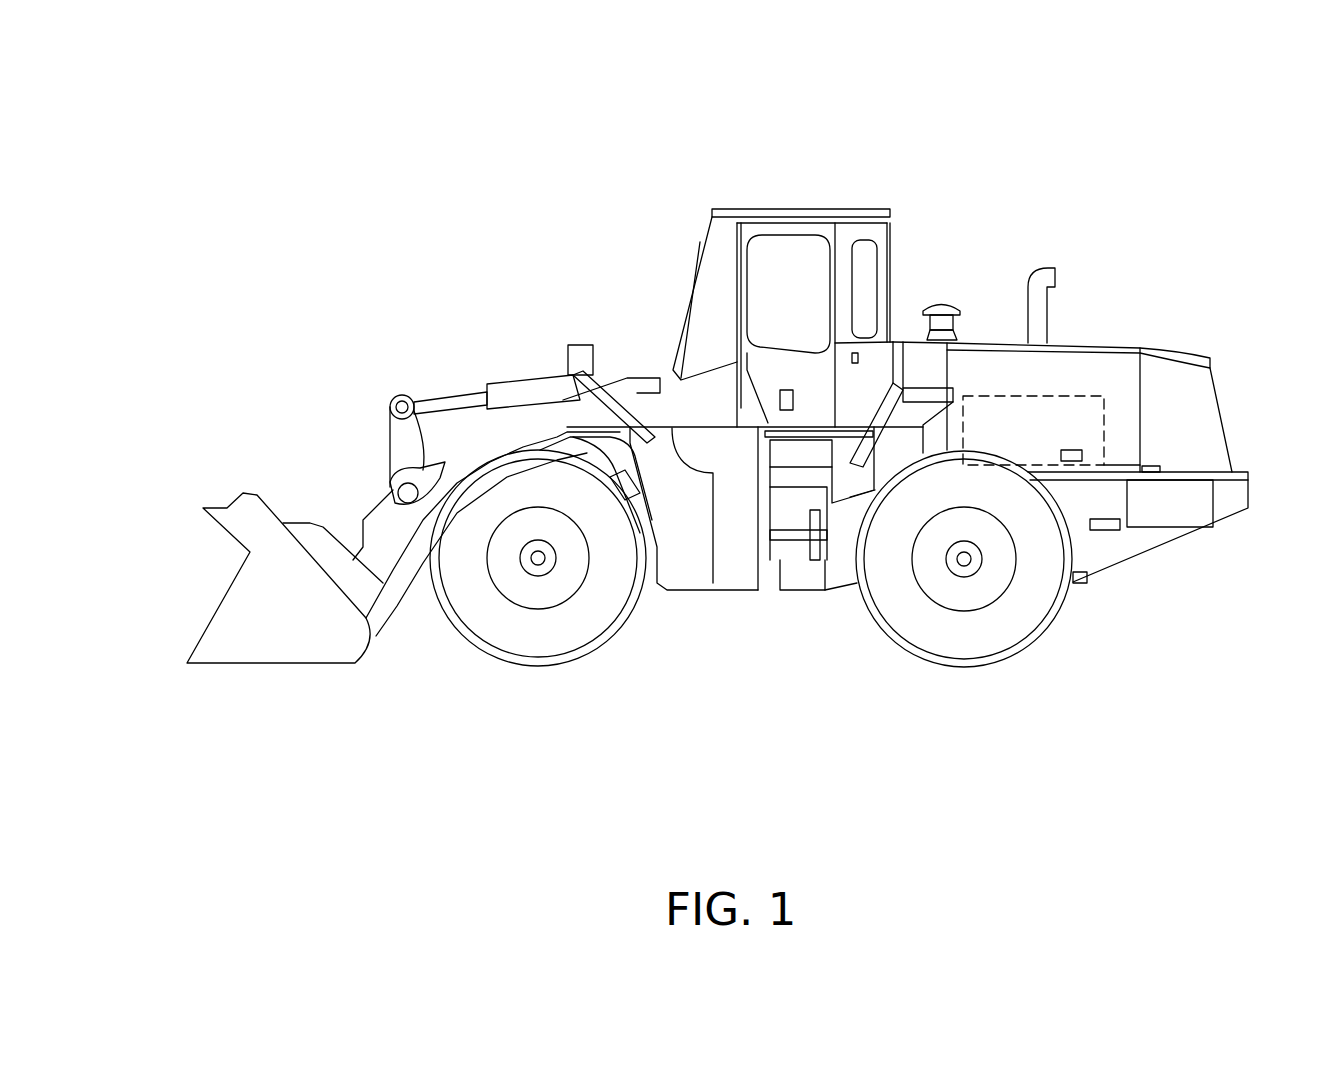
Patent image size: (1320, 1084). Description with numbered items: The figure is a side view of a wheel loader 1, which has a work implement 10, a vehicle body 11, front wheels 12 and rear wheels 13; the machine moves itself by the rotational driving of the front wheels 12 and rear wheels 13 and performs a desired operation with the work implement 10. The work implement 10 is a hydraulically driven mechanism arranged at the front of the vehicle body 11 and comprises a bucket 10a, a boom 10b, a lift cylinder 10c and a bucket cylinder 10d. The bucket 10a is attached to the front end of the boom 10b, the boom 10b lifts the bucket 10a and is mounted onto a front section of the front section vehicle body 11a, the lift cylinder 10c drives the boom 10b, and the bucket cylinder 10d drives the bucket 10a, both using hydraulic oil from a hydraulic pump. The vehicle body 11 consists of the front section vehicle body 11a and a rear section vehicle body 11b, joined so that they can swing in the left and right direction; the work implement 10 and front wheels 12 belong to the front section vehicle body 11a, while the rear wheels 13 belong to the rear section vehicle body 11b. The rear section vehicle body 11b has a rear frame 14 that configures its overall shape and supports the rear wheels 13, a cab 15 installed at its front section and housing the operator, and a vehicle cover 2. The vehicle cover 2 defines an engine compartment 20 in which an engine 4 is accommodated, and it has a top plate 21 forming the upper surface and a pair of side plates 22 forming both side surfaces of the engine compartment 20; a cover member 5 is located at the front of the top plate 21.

The wheel loader 1 is at (1200, 167).
The vehicle cover 2 is at (1105, 347).
The engine 4 is at (1053, 465).
The cover member 5 is at (943, 297).
The work implement 10 is at (240, 423).
The bucket 10a is at (210, 618).
The boom 10b is at (397, 607).
The lift cylinder 10c is at (570, 437).
The bucket cylinder 10d is at (500, 390).
The vehicle body 11 is at (710, 635).
The front section vehicle body 11a is at (627, 343).
The rear section vehicle body 11b is at (1002, 257).
The front wheels 12 is at (543, 663).
The rear wheels 13 is at (970, 663).
The rear frame 14 is at (1120, 530).
The cab 15 is at (785, 207).
The engine compartment 20 is at (1113, 378).
The top plate 21 is at (1070, 343).
The side plates 22 is at (1123, 438).